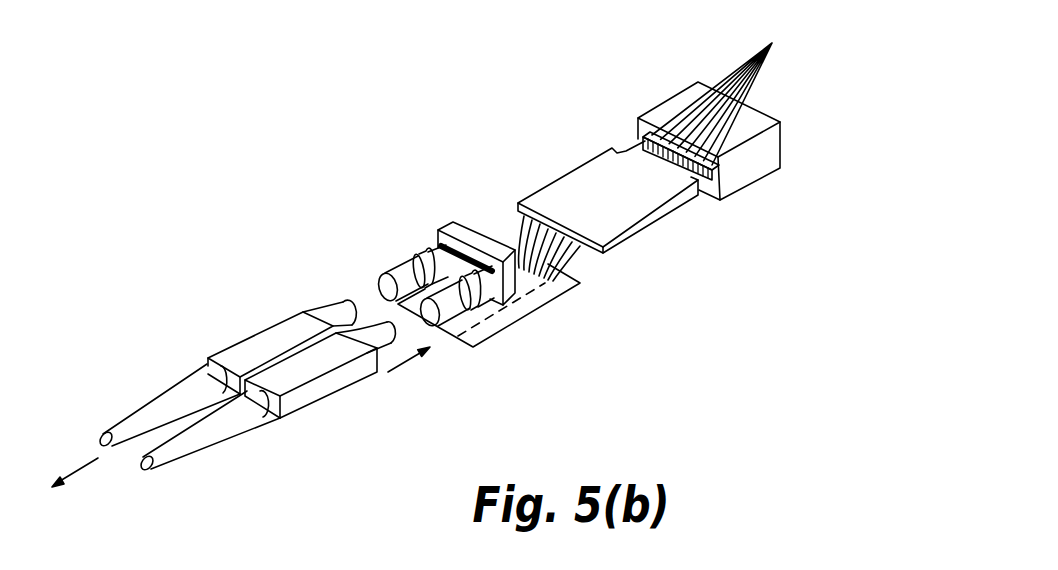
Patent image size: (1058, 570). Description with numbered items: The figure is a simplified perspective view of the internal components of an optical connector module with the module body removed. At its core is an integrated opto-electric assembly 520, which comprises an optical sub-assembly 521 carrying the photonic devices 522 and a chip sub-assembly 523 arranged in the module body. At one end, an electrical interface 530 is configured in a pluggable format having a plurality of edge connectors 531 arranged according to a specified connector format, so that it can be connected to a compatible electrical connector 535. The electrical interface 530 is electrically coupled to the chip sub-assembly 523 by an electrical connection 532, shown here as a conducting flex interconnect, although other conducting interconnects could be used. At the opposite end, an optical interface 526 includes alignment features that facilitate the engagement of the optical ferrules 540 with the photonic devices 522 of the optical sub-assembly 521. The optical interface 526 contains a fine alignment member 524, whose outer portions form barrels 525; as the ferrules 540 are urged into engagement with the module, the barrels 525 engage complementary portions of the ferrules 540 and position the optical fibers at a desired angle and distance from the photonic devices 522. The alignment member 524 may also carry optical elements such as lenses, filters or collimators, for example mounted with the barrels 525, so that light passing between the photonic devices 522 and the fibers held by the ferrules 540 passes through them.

The integrated opto-electric assembly 520 is at (541, 335).
The optical sub-assembly (OSA) 521 is at (453, 222).
The photonic devices 522 is at (542, 330).
The chip sub-assembly (CSA) 523 is at (493, 318).
The fine alignment member 524 is at (462, 323).
The barrels 525 is at (431, 324).
The optical interface 526 is at (438, 229).
The electrical interface 530 is at (663, 217).
The edge connectors 531 is at (722, 97).
The electrical connection (conducting flex interconnect) 532 is at (577, 258).
The electrical connector 535 is at (775, 155).
The ferrules 540 is at (378, 352).